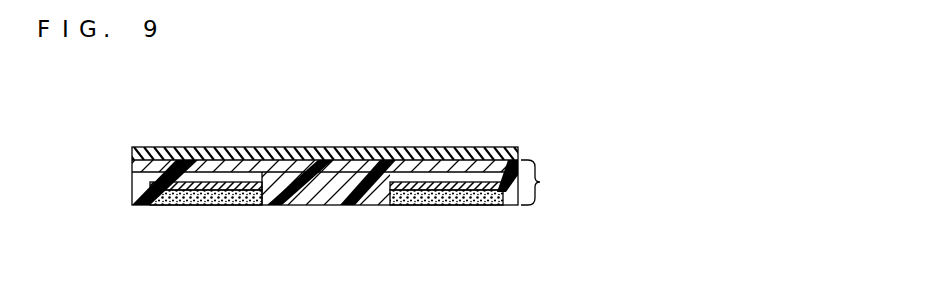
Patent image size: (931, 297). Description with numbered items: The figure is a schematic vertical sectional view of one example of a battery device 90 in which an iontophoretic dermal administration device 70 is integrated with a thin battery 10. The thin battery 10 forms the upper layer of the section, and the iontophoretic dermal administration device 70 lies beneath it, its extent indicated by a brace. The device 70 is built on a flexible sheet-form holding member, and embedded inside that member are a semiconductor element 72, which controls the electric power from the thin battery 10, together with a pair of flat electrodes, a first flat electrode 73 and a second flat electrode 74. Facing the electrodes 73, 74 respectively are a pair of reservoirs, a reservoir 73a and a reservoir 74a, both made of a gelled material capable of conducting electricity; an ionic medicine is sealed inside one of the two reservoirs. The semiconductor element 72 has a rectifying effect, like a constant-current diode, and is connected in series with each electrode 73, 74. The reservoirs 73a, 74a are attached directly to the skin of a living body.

The battery device 90 is at (557, 128).
The thin battery 10 is at (490, 152).
The semiconductor element 72 is at (323, 168).
The flat electrode 73 is at (208, 178).
The reservoir 73a is at (195, 205).
The flat electrode 74 is at (436, 182).
The reservoir 74a is at (452, 205).
The iontophoretic dermal administration device 70 is at (547, 182).